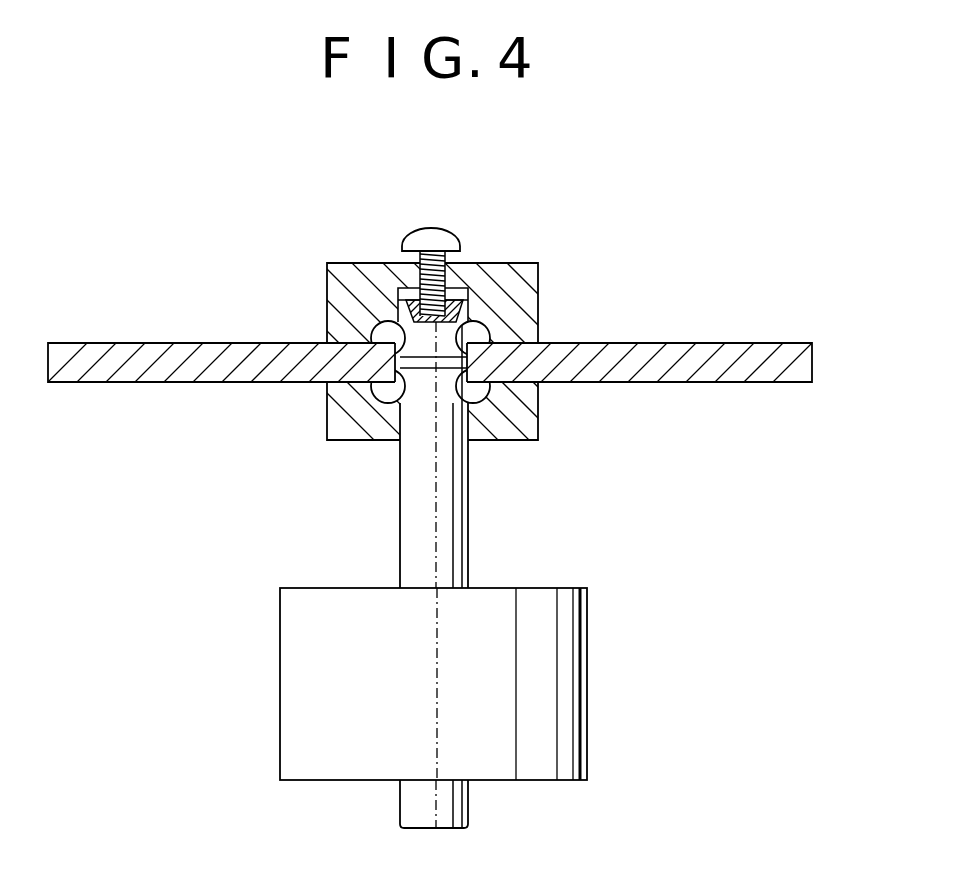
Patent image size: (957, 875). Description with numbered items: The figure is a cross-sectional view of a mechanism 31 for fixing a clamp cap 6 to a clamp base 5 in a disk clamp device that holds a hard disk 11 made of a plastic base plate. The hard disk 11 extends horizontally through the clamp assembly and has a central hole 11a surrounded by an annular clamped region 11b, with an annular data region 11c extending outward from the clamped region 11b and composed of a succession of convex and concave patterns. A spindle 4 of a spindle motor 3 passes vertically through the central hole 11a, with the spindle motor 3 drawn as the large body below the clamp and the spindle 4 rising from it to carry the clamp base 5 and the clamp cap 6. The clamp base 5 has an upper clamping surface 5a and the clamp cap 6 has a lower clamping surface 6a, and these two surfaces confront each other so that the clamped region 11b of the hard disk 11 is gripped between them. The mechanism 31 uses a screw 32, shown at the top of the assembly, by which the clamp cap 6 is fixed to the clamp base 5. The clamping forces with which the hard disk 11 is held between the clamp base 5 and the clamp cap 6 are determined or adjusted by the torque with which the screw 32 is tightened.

The spindle motor 3 is at (575, 683).
The spindle 4 is at (460, 540).
The clamp base 5 is at (525, 415).
The upper clamping surface 5a is at (528, 390).
The clamp cap 6 is at (510, 312).
The lower clamping surface 6a is at (528, 340).
The hard disk 11 is at (720, 360).
The central hole 11a is at (397, 382).
The clamped region 11b is at (350, 367).
The data region 11c is at (135, 370).
The mechanism for fixing the clamp cap to the clamp base 31 is at (499, 253).
The screw 32 is at (422, 240).